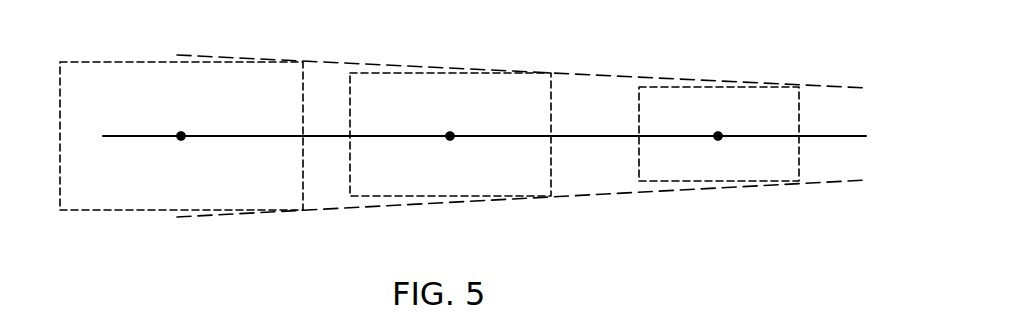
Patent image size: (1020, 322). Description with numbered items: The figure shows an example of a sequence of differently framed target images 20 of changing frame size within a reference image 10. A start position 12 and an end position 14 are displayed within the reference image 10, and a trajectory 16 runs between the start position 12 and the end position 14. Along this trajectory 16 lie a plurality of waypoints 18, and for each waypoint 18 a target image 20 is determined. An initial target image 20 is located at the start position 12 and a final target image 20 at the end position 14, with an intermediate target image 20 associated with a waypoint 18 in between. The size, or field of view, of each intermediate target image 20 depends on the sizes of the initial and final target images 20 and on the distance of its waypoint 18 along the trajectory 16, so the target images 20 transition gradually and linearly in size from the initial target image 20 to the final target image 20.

The reference image 10 is at (730, 218).
The start position 12 is at (181, 136).
The end position 14 is at (718, 136).
The trajectory 16 is at (338, 135).
The waypoint 18 is at (450, 136).
The target image 20 is at (95, 62).